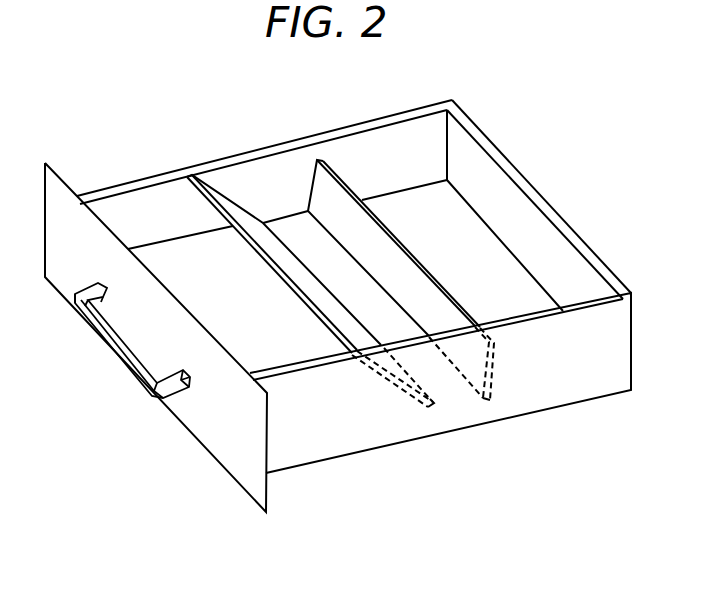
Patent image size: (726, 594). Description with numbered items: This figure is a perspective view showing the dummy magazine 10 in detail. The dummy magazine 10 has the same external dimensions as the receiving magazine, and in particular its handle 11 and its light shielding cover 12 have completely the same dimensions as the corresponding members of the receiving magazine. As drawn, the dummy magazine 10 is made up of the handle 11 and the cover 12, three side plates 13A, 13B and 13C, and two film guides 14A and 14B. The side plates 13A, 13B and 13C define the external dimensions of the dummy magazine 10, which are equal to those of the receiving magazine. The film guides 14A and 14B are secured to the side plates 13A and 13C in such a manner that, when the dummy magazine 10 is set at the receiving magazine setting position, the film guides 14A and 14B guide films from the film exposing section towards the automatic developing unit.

The dummy magazine 10 is at (189, 120).
The handle 11 is at (115, 353).
The light shielding cover 12 is at (193, 420).
The side plate 13A is at (357, 123).
The side plate 13B is at (537, 402).
The side plate 13C is at (554, 210).
The film guide 14A is at (283, 283).
The film guide 14B is at (418, 265).